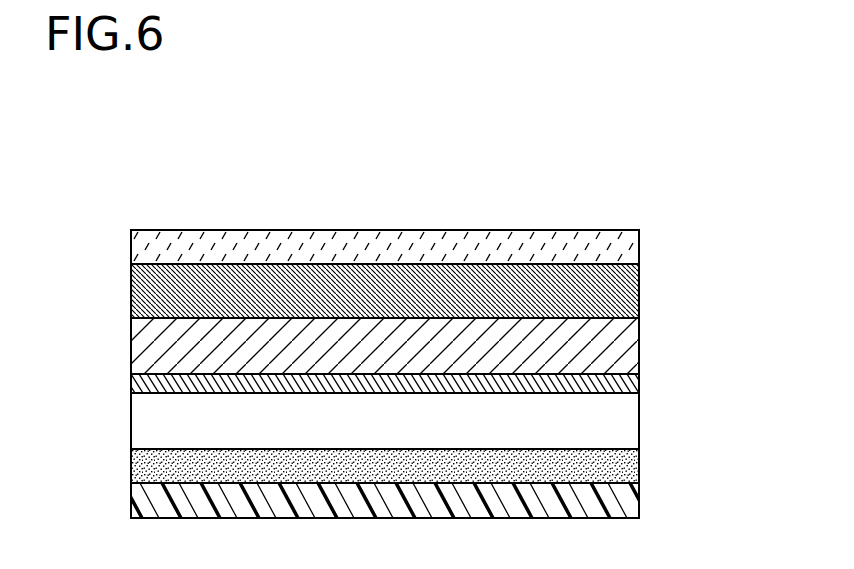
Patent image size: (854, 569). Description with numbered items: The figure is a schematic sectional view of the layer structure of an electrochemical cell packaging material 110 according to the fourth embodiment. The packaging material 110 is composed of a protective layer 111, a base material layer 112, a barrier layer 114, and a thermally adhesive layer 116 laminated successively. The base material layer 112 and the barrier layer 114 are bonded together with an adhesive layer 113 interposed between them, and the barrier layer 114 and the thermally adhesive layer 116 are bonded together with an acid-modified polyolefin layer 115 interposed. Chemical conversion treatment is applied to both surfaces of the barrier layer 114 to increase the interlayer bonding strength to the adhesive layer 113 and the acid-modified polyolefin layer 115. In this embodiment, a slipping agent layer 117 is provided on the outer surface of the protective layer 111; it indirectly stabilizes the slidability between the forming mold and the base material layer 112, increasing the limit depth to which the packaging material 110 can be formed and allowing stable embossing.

The packaging material 110 is at (121, 233).
The protective layer 111 is at (623, 288).
The base material layer 112 is at (612, 328).
The adhesive layer 113 is at (613, 383).
The barrier layer 114 is at (612, 416).
The acid-modified polyolefin layer 115 is at (614, 465).
The thermally adhesive layer 116 is at (613, 508).
The slipping agent layer 117 is at (607, 237).